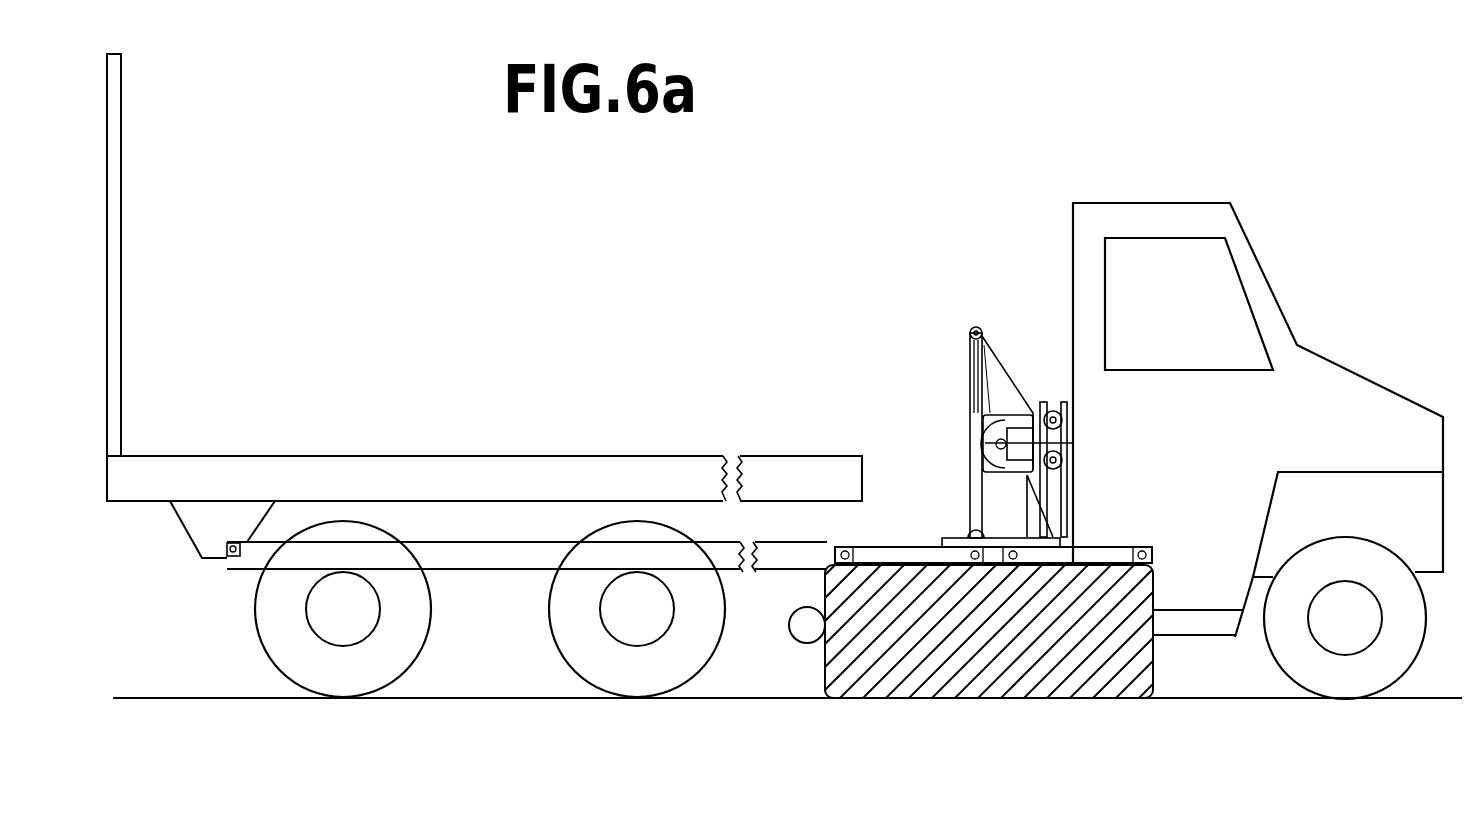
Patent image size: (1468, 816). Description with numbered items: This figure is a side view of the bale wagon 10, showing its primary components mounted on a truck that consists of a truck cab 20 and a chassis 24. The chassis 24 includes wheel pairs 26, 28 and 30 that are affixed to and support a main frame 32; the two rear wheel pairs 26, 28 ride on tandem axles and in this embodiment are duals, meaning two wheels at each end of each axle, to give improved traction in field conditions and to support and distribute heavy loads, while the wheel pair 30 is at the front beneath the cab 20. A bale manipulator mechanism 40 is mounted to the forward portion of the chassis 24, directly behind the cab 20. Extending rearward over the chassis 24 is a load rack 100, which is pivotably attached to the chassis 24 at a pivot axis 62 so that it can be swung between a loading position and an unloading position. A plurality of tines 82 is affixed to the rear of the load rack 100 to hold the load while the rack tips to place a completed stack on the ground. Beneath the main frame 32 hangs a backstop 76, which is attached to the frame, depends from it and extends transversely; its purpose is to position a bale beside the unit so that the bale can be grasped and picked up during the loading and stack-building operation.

The bale wagon 10 is at (829, 208).
The truck cab 20 is at (1372, 223).
The chassis 24 is at (731, 662).
The wheel pair 26 is at (335, 678).
The wheel pair 28 is at (617, 678).
The wheel pair 30 is at (1325, 673).
The main frame 32 is at (783, 548).
The bale manipulator mechanism 40 is at (966, 281).
The pivot axis 62 is at (226, 560).
The backstop 76 is at (806, 641).
The tines 82 is at (118, 175).
The load rack 100 is at (388, 400).